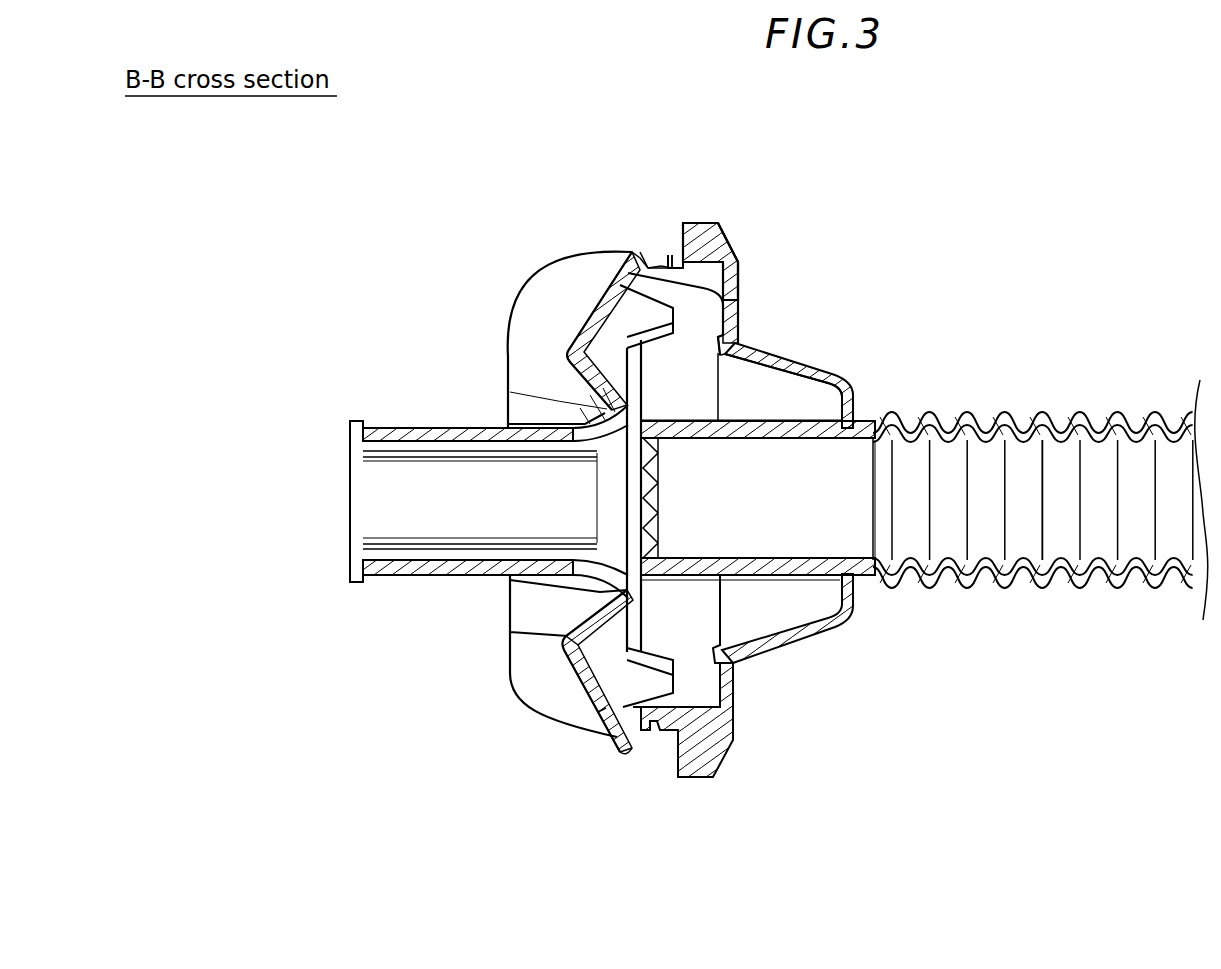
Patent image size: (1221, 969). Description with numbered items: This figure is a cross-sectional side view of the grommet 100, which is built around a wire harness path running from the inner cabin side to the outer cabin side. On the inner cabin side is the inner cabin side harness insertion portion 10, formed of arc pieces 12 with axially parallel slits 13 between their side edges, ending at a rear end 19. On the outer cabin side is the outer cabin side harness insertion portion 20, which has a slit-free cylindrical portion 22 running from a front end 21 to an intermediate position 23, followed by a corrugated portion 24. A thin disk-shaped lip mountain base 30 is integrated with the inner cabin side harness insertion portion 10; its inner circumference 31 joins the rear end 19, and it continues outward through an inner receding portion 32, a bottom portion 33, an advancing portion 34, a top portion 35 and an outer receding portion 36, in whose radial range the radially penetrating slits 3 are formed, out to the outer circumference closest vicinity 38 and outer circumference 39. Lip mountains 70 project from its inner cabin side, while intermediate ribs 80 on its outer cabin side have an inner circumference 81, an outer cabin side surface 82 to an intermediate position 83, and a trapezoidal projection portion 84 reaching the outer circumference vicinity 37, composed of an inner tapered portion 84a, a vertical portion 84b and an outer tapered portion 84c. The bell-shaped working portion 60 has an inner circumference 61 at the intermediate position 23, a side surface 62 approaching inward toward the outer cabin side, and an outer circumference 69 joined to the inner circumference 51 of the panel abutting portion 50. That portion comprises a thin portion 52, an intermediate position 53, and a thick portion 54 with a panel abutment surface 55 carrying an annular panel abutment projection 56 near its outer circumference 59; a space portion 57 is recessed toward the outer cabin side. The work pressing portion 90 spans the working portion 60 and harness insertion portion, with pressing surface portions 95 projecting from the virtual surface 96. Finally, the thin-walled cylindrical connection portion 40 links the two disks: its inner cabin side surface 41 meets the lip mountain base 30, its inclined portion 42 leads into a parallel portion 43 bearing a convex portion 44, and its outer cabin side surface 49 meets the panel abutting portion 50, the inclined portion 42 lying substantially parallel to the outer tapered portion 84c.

The grommet 100 is at (441, 160).
The inner cabin side harness insertion portion 10 is at (298, 462).
The arc pieces 12 is at (366, 474).
The slits 13 is at (378, 497).
The rear end 19 is at (405, 518).
The outer cabin side harness insertion portion 20 is at (1036, 645).
The front end 21 is at (873, 480).
The cylindrical portion 22 is at (893, 503).
The intermediate position 23 is at (930, 527).
The corrugated portion 24 is at (1027, 513).
The lip mountain base 30 is at (355, 167).
The slits 3 is at (545, 305).
The inner circumference 31 is at (483, 453).
The inner receding portion 32 is at (547, 467).
The bottom portion 33 is at (615, 395).
The advancing portion 34 is at (600, 375).
The top portion 35 is at (590, 352).
The outer receding portion 36 is at (575, 335).
The outer circumference vicinity 37 is at (595, 305).
The outer circumference closest vicinity 38 is at (622, 268).
The outer circumference 39 is at (620, 252).
The connection portion 40 is at (688, 148).
The inner cabin side surface 41 is at (647, 253).
The inclined portion 42 is at (653, 262).
The parallel portion 43 is at (660, 244).
The convex portion 44 is at (663, 258).
The outer cabin side surface 49 is at (668, 248).
The panel abutting portion 50 is at (898, 120).
The inner circumference 51 is at (757, 352).
The thin portion 52 is at (737, 300).
The intermediate position 53 is at (722, 284).
The thick portion 54 is at (736, 244).
The panel abutment surface 55 is at (672, 215).
The panel abutment projection 56 is at (680, 225).
The space portion 57 is at (728, 325).
The outer circumference 59 is at (710, 222).
The lip mountains 70 is at (775, 370).
The intermediate ribs 80 is at (360, 645).
The inner circumference 81 is at (585, 598).
The outer cabin side surface 82 is at (590, 622).
The intermediate position 83 is at (600, 645).
The projection portion 84 is at (412, 732).
The inner tapered portion 84a is at (612, 690).
The vertical portion 84b is at (628, 715).
The outer tapered portion 84c is at (640, 742).
The working portion 60 is at (902, 688).
The inner circumference 61 is at (852, 600).
The side surface 62 is at (793, 633).
The outer circumference 69 is at (737, 660).
The work pressing portion 90 is at (700, 410).
The pressing surface portion 95 is at (870, 432).
The virtual surface 96 is at (852, 425).